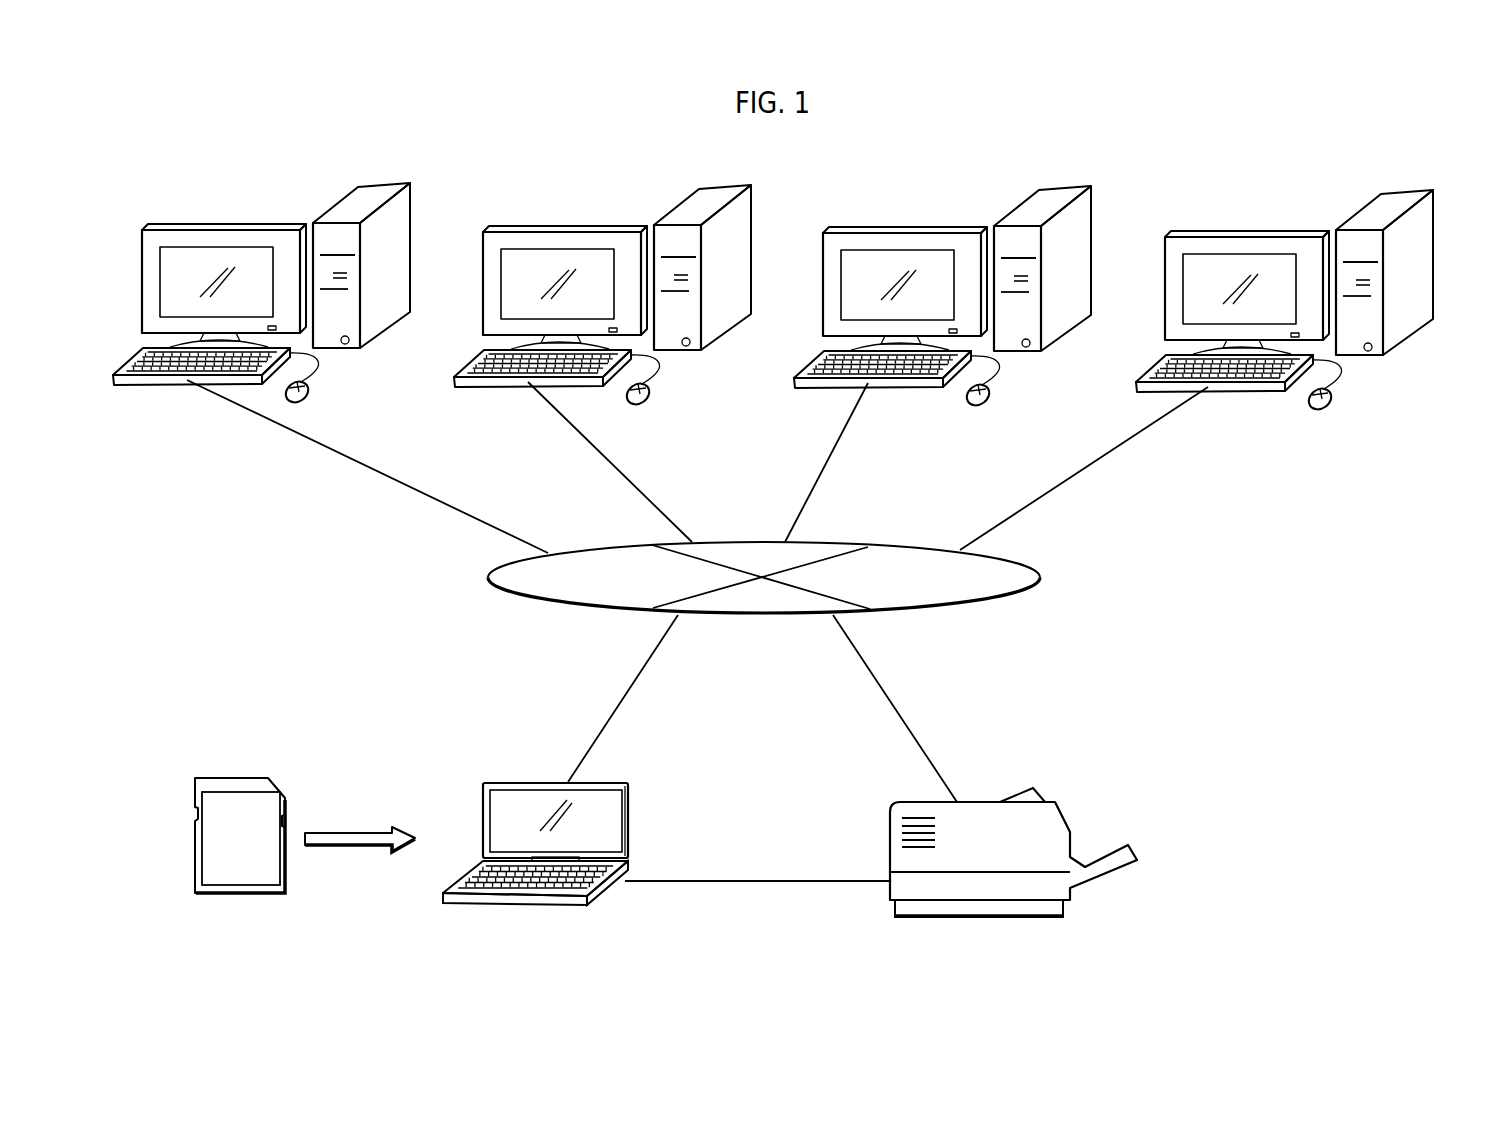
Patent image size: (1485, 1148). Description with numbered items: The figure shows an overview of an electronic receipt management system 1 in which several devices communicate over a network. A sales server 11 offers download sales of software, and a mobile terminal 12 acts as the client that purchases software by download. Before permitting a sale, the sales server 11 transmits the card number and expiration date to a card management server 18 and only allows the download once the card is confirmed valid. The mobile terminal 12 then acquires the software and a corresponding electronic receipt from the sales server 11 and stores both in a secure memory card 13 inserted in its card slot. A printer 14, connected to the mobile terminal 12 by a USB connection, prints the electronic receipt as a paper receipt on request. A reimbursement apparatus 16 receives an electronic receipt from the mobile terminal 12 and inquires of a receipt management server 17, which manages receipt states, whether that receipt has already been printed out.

The electronic receipt management system 1 is at (1405, 522).
The sales server 11 is at (216, 224).
The mobile terminal 12 is at (597, 896).
The secure memory card 13 is at (278, 783).
The printer 14 is at (1063, 812).
The reimbursement apparatus 16 is at (563, 228).
The receipt management server 17 is at (898, 232).
The card management server 18 is at (1233, 235).